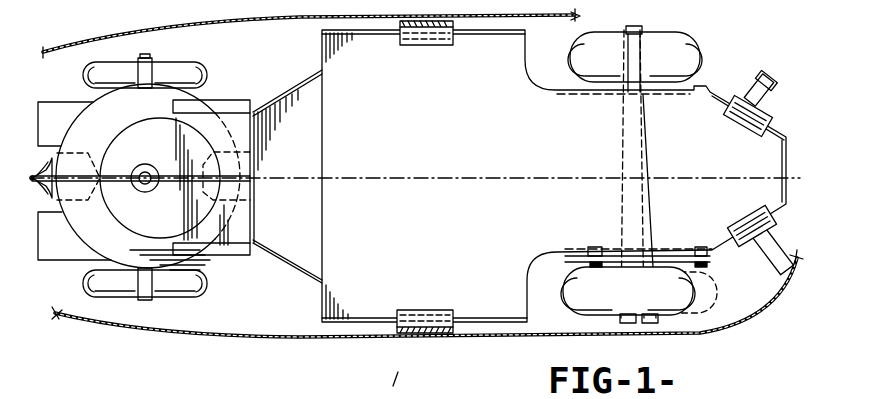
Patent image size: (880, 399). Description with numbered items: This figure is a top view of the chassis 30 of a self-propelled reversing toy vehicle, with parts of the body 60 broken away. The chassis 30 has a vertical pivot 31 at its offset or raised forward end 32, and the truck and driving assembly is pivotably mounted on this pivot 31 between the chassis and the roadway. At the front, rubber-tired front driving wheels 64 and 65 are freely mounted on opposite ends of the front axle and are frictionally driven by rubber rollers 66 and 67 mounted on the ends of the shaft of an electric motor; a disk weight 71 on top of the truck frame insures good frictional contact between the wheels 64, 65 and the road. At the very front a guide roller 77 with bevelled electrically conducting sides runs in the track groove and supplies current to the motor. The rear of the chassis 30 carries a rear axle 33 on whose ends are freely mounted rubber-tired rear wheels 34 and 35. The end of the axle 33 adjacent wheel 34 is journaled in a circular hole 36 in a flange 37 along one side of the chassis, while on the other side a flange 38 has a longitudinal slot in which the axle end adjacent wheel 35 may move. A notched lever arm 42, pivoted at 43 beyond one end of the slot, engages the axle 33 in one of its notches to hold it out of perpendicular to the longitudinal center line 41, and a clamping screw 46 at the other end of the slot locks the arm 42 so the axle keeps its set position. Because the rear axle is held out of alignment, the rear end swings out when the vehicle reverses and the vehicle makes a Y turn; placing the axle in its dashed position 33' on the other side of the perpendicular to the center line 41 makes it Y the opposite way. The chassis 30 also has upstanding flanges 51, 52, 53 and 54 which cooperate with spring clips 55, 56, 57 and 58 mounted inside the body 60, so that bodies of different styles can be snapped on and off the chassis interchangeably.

The chassis 30 is at (443, 146).
The vertical pivot 31 is at (143, 173).
The forward end 32 is at (168, 219).
The rear axle 33 is at (600, 174).
The dashed line position of rear axle 33' is at (666, 174).
The rear wheel 34 is at (688, 43).
The rear wheel 35 is at (683, 312).
The circular hole 36 is at (642, 92).
The flange 37 is at (695, 90).
The flange 38 is at (682, 243).
The longitudinal center line 41 is at (560, 177).
The notched lever arm 42 is at (578, 265).
The pivot 43 is at (592, 248).
The clamping screw 46 is at (710, 263).
The upstanding flange 51 is at (488, 295).
The upstanding flange 52 is at (468, 33).
The upstanding flange 53 is at (773, 133).
The upstanding flange 54 is at (780, 193).
The spring clip 55 is at (423, 310).
The spring clip 56 is at (412, 45).
The spring clip 57 is at (740, 123).
The spring clip 58 is at (752, 212).
The body 60 is at (80, 32).
The front driving wheel 64 is at (193, 65).
The front driving wheel 65 is at (197, 290).
The rubber roller 66 is at (145, 60).
The rubber roller 67 is at (143, 292).
The disk weight 71 is at (200, 108).
The guide roller 77 is at (38, 173).